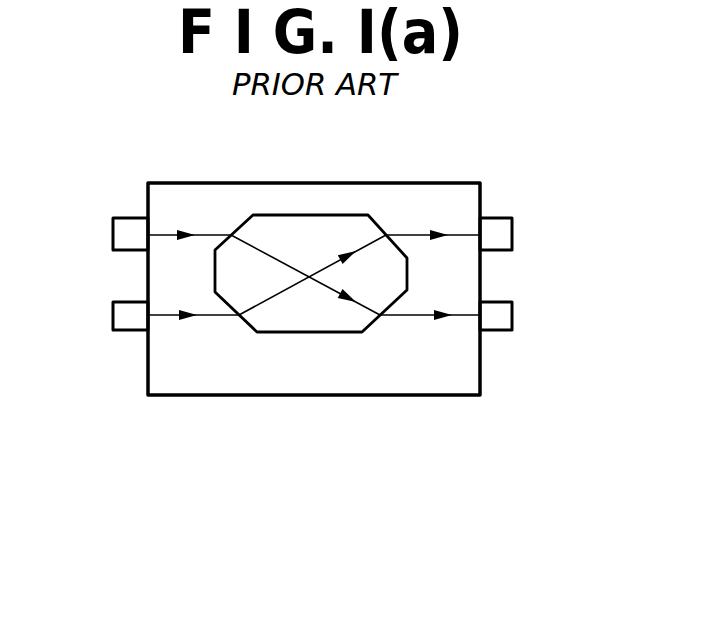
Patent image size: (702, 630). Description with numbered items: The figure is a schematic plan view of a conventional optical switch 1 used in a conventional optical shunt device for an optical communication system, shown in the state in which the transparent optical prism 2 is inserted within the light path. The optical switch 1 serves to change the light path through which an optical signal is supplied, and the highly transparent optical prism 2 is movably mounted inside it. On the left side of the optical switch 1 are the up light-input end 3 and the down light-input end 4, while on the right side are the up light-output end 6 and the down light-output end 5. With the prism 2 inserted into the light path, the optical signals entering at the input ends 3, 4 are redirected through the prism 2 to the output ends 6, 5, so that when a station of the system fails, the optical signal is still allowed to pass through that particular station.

The optical switch 1 is at (428, 394).
The transparent optical prism 2 is at (308, 215).
The up light-input end 3 is at (125, 218).
The down light-input end 4 is at (127, 331).
The down light-output end 5 is at (500, 323).
The up light-output end 6 is at (500, 225).